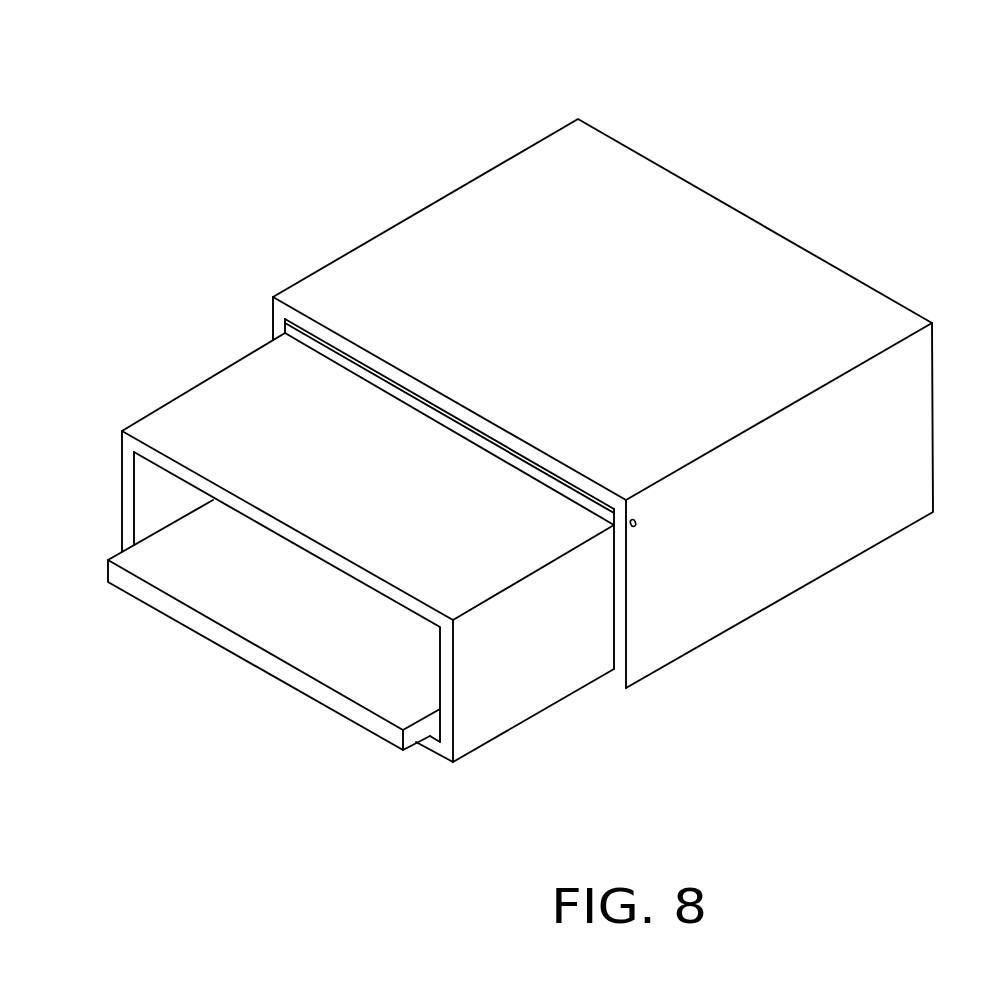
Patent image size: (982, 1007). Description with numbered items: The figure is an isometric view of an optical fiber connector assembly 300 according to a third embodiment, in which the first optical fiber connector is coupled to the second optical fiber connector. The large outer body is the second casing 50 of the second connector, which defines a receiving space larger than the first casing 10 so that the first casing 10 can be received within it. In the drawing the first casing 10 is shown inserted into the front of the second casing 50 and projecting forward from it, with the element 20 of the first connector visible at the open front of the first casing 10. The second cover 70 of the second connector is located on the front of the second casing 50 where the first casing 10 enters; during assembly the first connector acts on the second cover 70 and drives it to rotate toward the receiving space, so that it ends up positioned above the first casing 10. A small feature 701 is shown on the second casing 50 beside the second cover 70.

The optical fiber connector assembly 300 is at (257, 104).
The second casing 50 is at (752, 273).
The second cover 70 is at (323, 350).
The hole 701 is at (637, 523).
The first casing 10 is at (247, 407).
The tray / drawer 20 is at (247, 597).